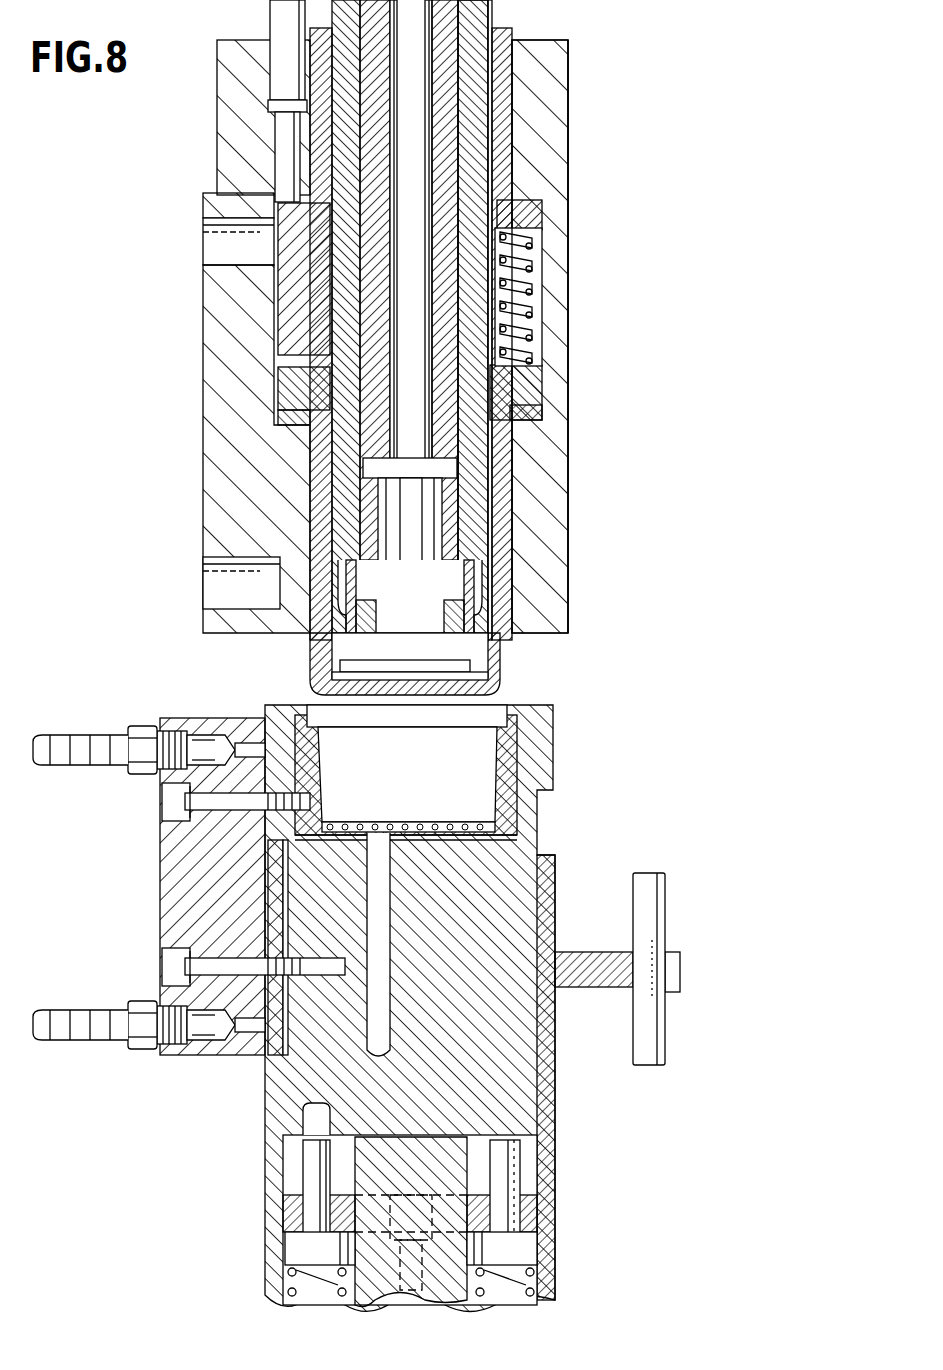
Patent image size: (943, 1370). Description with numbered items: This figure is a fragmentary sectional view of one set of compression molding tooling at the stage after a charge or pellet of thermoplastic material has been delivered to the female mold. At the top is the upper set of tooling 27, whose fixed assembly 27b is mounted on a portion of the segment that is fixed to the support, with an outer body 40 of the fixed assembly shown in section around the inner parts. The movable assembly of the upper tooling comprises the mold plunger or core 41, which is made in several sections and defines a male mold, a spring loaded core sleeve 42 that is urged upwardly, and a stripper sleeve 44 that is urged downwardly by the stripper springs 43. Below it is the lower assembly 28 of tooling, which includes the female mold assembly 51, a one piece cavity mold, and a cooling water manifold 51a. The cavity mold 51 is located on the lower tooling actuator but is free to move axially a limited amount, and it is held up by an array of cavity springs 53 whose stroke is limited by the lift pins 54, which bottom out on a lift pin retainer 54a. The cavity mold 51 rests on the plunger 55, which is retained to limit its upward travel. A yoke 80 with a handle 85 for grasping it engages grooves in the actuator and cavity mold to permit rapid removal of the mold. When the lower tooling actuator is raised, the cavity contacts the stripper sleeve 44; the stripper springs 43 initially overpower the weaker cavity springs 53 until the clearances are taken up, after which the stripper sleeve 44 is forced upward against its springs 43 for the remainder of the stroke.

The upper set of tooling 27 is at (590, 204).
The fixed assembly 27b is at (606, 451).
The lower assembly of tooling 28 is at (585, 775).
The outer housing 40 is at (548, 577).
The mold plunger or core 41 is at (505, 688).
The core sleeve 42 is at (478, 500).
The stripper springs 43 is at (503, 305).
The stripper sleeve 44 is at (502, 672).
The female mold assembly 51 is at (543, 749).
The cooling water manifold 51a is at (176, 920).
The cavity springs 53 is at (520, 1283).
The lift pins 54 is at (312, 1160).
The lift pin retainer 54a is at (297, 1212).
The plunger 55 is at (448, 1168).
The yoke 80 is at (590, 936).
The handle 85 is at (637, 1048).